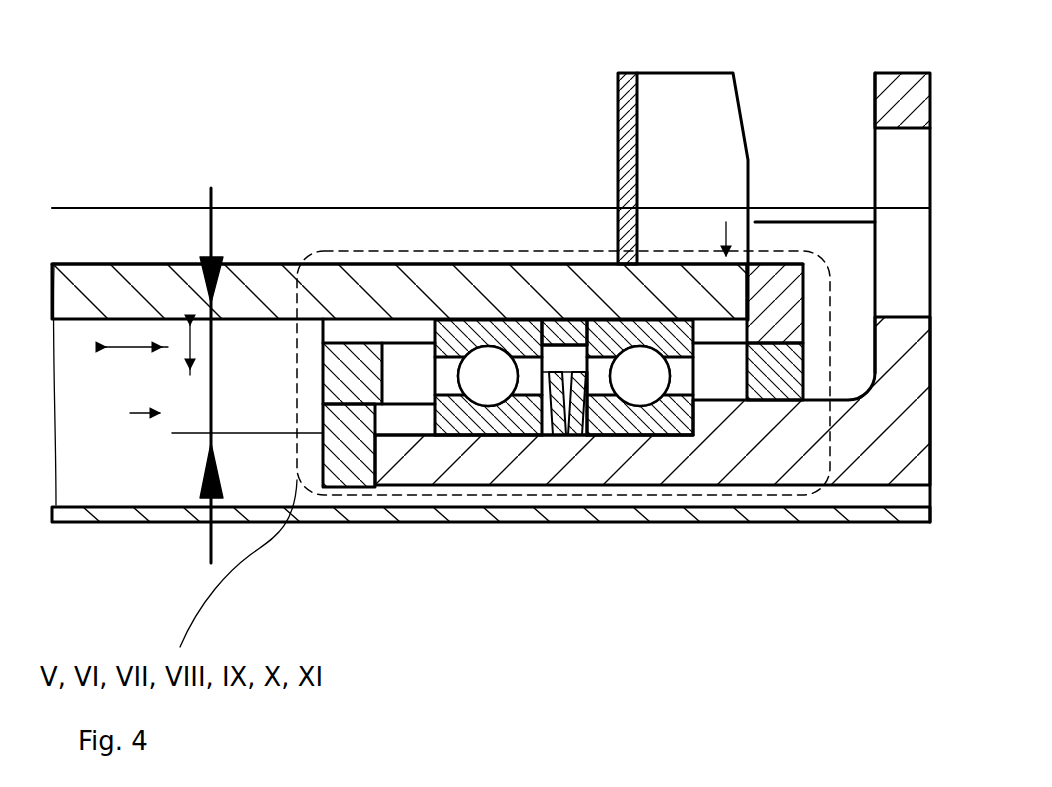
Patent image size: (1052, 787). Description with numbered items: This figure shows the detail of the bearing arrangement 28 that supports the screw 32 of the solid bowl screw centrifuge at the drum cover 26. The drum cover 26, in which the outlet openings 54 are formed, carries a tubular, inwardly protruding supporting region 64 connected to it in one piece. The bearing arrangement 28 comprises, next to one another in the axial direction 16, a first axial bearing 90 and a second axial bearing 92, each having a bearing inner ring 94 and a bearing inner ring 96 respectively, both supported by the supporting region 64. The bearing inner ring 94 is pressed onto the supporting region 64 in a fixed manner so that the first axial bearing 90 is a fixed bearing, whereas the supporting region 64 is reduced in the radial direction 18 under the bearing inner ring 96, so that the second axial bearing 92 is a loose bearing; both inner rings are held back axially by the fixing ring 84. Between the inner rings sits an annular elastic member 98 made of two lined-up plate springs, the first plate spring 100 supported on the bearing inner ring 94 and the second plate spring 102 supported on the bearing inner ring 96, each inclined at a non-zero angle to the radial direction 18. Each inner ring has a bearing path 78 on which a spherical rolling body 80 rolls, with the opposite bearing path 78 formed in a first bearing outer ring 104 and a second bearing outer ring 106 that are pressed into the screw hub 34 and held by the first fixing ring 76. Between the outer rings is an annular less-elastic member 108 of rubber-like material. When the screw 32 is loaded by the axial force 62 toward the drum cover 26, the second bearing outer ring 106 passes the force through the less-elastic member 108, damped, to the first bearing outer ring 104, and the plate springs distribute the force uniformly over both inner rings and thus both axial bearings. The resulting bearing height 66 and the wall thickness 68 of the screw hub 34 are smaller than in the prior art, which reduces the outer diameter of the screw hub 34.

The axial direction 16 is at (138, 345).
The radial direction 18 is at (190, 328).
The drum cover 26 is at (912, 98).
The bearing arrangement 28 is at (614, 255).
The screw 32 is at (186, 66).
The screw hub 34 is at (356, 290).
The outlet openings 54 is at (900, 270).
The axial force 62 is at (147, 413).
The supporting region 64 is at (745, 440).
The bearing height 66 is at (222, 385).
The wall thickness 68 is at (760, 280).
The first fixing ring 76 is at (773, 307).
The bearing path 78 is at (432, 318).
The rolling body 80 is at (512, 422).
The fixing ring 84 is at (356, 512).
The first axial bearing 90 is at (642, 300).
The second axial bearing 92 is at (468, 300).
The bearing inner ring 94 is at (718, 402).
The bearing inner ring 96 is at (445, 437).
The elastic member 98 is at (567, 448).
The first plate spring 100 is at (590, 437).
The second plate spring 102 is at (560, 432).
The first bearing outer ring 104 is at (597, 318).
The second bearing outer ring 106 is at (540, 318).
The less-elastic member 108 is at (586, 274).